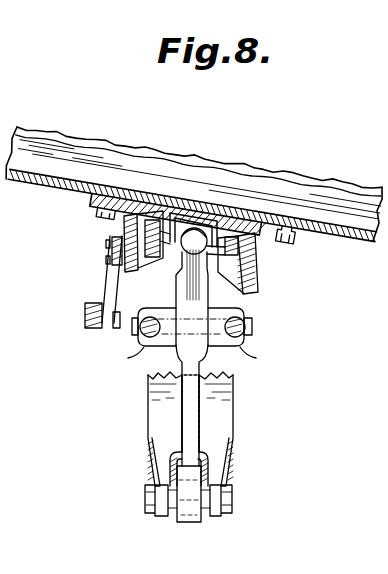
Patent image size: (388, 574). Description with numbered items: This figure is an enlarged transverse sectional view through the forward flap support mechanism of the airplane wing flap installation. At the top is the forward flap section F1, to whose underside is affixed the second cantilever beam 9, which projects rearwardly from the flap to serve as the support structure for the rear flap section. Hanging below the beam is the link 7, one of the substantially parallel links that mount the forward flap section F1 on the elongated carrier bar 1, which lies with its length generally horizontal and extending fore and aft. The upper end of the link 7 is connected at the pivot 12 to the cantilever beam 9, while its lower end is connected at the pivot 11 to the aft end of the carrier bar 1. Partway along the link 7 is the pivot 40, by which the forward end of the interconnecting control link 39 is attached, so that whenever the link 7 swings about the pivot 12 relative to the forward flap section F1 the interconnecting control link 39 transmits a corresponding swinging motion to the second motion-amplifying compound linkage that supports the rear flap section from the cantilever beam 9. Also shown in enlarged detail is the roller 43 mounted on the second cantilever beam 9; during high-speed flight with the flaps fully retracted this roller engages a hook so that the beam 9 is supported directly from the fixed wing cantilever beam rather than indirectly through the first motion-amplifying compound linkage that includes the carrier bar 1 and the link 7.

The forward flap section F1 is at (307, 220).
The pivot 12 is at (193, 231).
The second cantilever beam 9 is at (124, 224).
The roller 43 is at (86, 332).
The pivot 40 is at (253, 326).
The interconnecting control link 39 is at (128, 358).
The link 7 is at (185, 402).
The carrier bar 1 is at (221, 412).
The pivot 11 is at (180, 523).